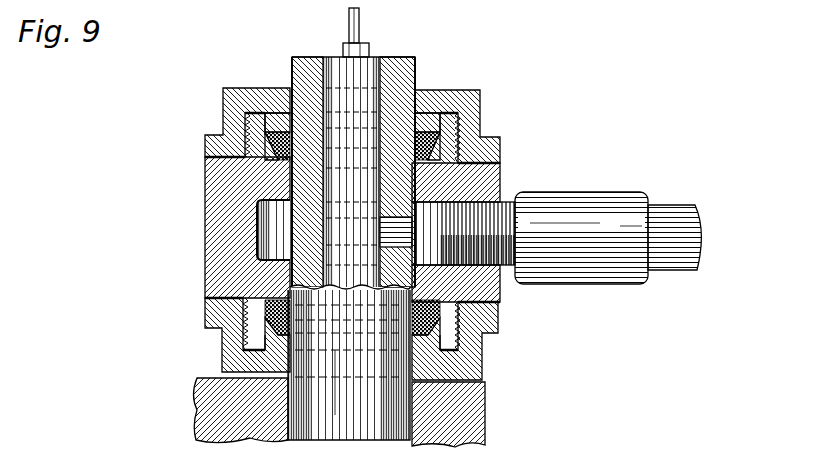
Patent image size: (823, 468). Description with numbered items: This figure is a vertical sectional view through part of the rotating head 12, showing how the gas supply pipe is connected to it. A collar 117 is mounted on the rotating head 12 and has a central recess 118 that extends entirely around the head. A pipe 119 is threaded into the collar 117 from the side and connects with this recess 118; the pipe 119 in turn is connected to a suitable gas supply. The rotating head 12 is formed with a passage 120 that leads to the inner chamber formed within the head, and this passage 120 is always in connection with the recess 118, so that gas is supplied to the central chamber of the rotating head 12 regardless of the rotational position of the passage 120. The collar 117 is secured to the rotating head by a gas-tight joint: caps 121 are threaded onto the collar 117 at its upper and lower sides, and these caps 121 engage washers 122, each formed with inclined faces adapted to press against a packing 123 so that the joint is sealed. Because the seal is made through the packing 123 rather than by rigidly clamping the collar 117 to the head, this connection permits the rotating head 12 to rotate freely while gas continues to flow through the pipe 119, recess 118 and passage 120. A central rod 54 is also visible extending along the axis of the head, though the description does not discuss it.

The valve rod 54 is at (349, 22).
The rotating head 12 is at (392, 72).
The caps 121 is at (463, 100).
The washers 122 is at (428, 123).
The packing 123 is at (462, 128).
The passage 120 is at (483, 142).
The collar 117 is at (487, 185).
The pipe 119 is at (488, 228).
The central recess 118 is at (257, 227).